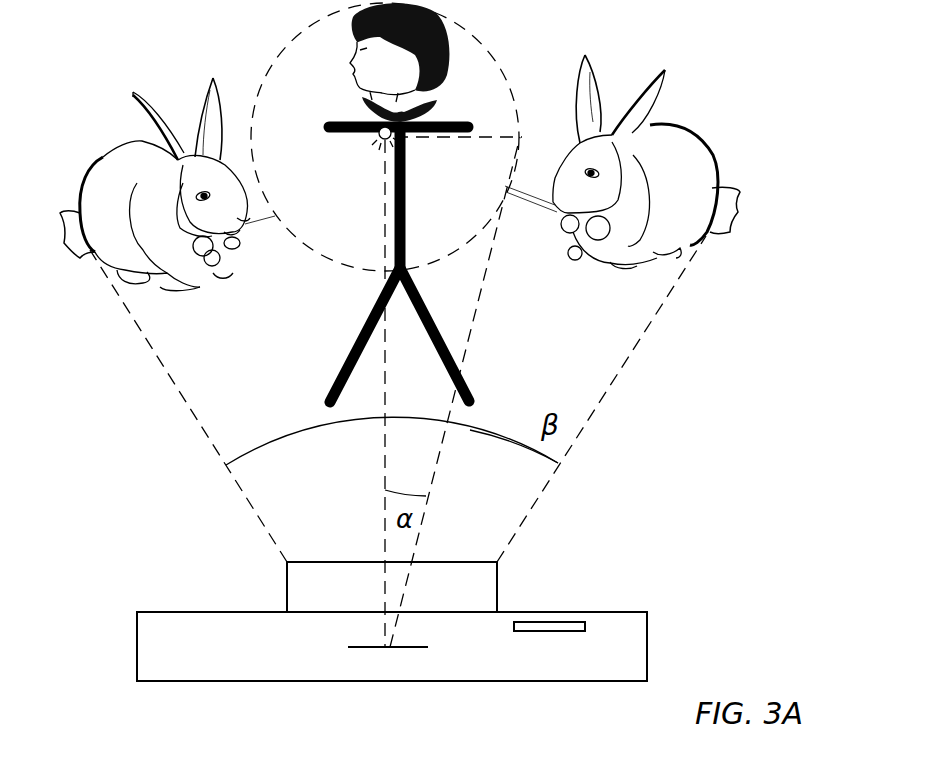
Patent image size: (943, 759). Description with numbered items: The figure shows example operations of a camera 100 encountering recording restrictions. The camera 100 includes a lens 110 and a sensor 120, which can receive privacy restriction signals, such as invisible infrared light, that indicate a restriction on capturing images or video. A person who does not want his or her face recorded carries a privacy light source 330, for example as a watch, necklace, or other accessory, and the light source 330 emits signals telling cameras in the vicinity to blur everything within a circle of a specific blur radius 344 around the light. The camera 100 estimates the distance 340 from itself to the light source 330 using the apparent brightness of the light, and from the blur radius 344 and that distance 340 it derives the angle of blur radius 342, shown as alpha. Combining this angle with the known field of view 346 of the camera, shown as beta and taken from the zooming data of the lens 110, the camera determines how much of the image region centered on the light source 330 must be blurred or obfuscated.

The camera 100 is at (137, 648).
The lens 110 is at (287, 588).
The sensor 120 is at (535, 632).
The light source 330 is at (366, 151).
The distance from the camera to the light source 340 is at (382, 444).
The angle of blur radius 342 is at (412, 490).
The blur radius 344 is at (440, 140).
The field of view 346 is at (495, 432).